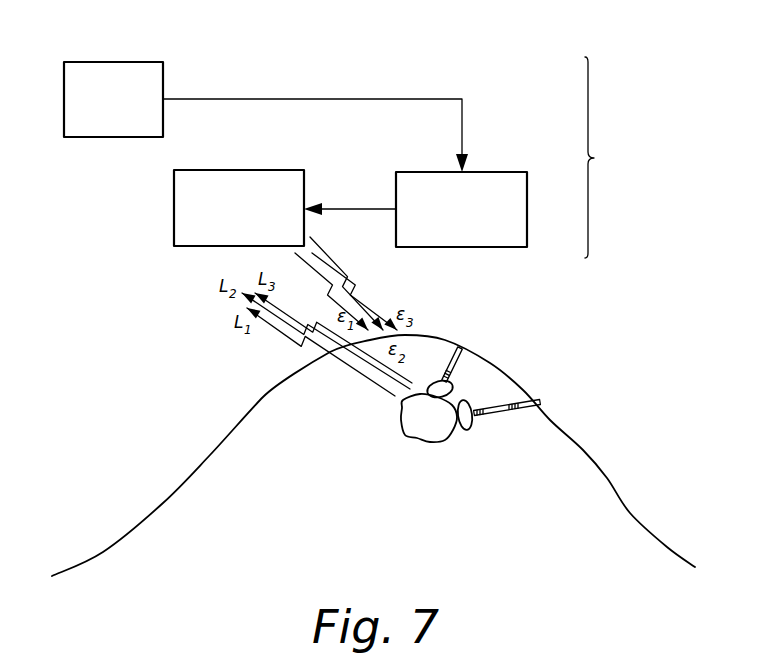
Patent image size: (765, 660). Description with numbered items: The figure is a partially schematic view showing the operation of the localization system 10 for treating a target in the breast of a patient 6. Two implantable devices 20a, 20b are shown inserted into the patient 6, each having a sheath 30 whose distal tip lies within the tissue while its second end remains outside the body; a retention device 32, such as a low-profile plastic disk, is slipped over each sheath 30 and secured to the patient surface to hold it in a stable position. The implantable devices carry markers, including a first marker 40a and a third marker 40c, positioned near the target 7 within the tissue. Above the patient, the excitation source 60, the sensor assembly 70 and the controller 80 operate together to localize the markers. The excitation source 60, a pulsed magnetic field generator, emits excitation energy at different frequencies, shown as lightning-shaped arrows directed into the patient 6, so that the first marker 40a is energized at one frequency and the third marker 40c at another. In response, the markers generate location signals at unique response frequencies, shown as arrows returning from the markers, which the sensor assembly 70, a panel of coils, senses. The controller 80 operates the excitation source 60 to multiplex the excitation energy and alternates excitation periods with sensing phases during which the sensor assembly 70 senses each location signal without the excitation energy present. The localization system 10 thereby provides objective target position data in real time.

The sensor assembly 70 is at (64, 86).
The excitation source 60 is at (278, 170).
The controller 80 is at (500, 172).
The localization system 10 is at (594, 158).
The patient 6 is at (607, 478).
The target tissue (tumor) 7 is at (416, 441).
The retention device 32 is at (425, 390).
The first marker 40a is at (438, 382).
The third marker 40c is at (522, 408).
The sheath 30 is at (458, 368).
The implantable device 20a is at (472, 384).
The implantable device 20b is at (508, 434).